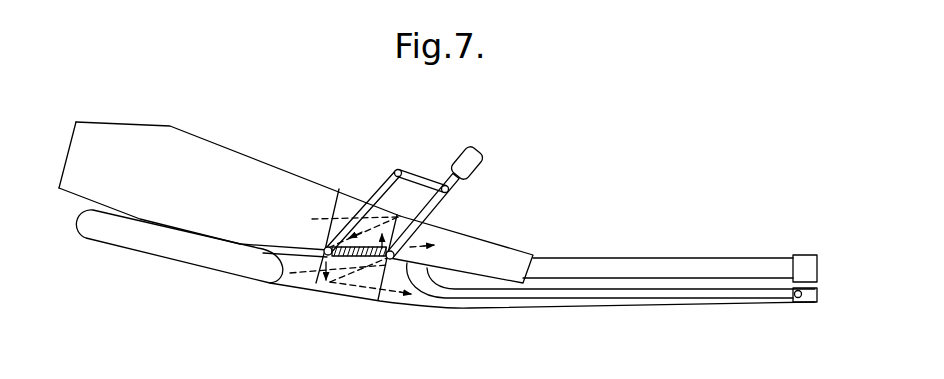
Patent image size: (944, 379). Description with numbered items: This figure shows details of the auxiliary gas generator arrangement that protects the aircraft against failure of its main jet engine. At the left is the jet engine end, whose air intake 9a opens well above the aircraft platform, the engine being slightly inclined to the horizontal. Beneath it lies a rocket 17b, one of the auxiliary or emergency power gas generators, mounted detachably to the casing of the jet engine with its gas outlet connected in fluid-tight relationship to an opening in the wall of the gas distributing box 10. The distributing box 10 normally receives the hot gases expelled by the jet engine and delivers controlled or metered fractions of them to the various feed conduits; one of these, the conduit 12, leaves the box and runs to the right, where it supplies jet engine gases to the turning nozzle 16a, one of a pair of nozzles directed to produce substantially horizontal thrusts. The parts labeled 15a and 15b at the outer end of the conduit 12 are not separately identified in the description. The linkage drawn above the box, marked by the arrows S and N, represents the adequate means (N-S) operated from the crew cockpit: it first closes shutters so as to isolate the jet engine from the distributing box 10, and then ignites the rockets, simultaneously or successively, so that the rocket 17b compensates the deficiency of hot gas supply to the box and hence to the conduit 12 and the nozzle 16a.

The air intake 9a is at (247, 162).
The rocket 17b is at (177, 252).
The gas distributing box 10 is at (511, 252).
The conduit 12 is at (521, 293).
The upper end stop 15a is at (812, 254).
The lower end stop 15b is at (815, 304).
The turning nozzle 16a is at (795, 300).
The shutter closing and rocket igniting means S is at (417, 125).
The shutter closing and rocket igniting means N is at (424, 134).